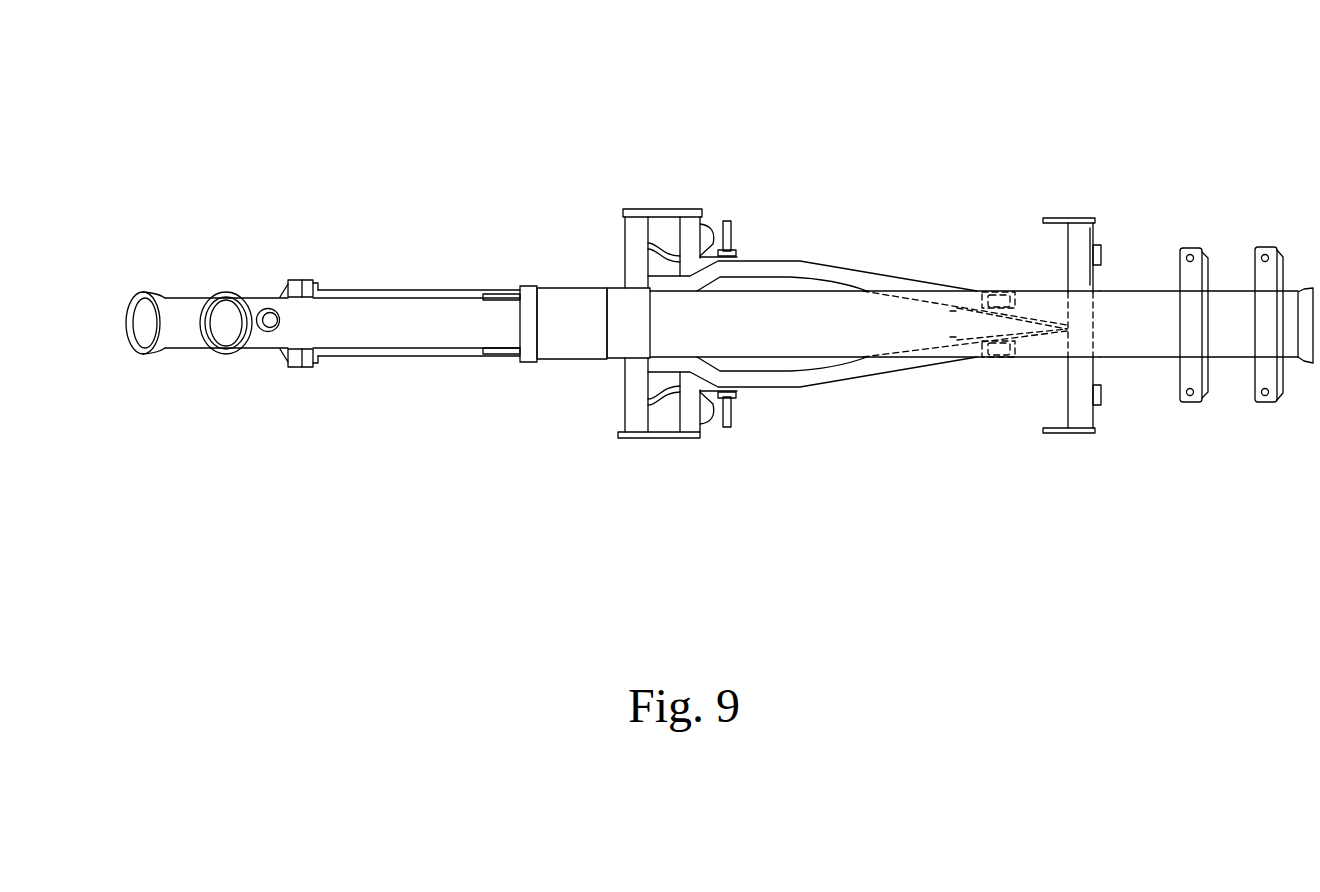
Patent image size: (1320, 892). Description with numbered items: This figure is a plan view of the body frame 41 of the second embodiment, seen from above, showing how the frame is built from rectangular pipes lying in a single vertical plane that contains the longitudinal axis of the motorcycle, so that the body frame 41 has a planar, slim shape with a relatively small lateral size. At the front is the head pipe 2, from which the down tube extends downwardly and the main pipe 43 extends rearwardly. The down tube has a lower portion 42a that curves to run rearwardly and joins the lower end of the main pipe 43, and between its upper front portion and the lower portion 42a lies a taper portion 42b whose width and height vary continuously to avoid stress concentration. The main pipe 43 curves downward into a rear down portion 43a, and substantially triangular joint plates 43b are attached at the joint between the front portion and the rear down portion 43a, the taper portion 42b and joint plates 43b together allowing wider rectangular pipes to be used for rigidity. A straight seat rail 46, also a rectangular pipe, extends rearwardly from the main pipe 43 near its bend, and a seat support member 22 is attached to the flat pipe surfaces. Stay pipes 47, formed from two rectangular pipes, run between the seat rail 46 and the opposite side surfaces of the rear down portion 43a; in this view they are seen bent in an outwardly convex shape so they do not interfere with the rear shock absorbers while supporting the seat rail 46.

The head pipe 2 is at (183, 302).
The seat support member 22 is at (1068, 257).
The body frame 41 is at (987, 147).
The lower portion 42a is at (443, 358).
The taper portion 42b is at (280, 297).
The main pipe 43 is at (425, 315).
The rear down portion 43a is at (572, 287).
The joint plates 43b is at (502, 297).
The seat rail 46 is at (1130, 293).
The stay pipes 47 is at (848, 268).